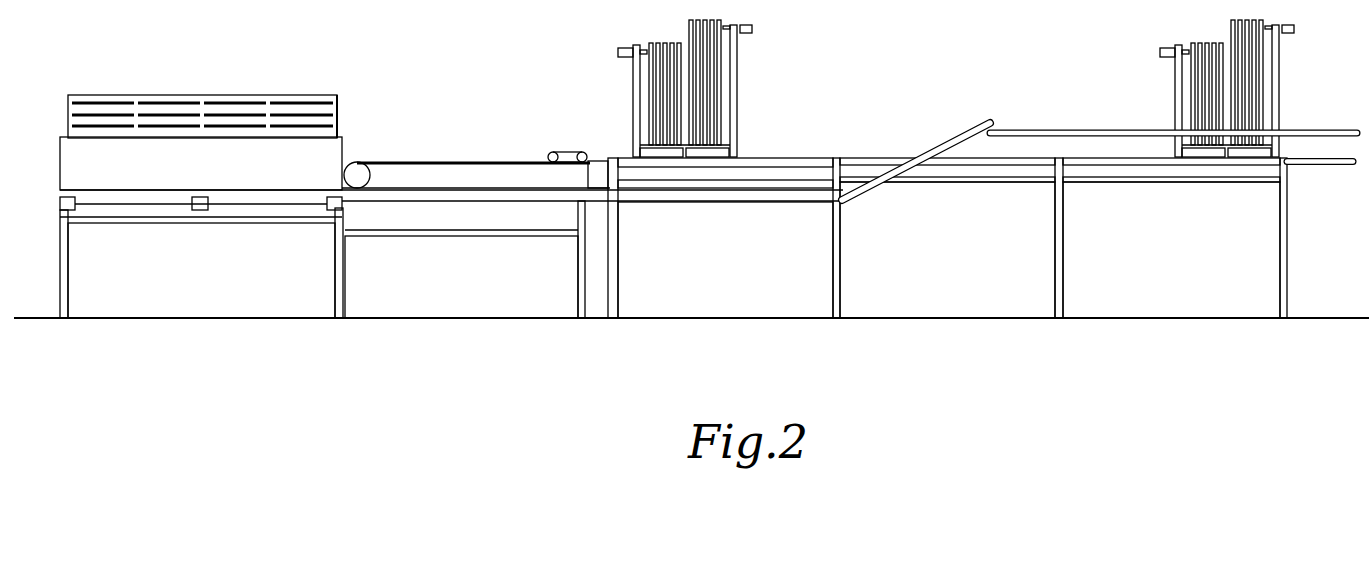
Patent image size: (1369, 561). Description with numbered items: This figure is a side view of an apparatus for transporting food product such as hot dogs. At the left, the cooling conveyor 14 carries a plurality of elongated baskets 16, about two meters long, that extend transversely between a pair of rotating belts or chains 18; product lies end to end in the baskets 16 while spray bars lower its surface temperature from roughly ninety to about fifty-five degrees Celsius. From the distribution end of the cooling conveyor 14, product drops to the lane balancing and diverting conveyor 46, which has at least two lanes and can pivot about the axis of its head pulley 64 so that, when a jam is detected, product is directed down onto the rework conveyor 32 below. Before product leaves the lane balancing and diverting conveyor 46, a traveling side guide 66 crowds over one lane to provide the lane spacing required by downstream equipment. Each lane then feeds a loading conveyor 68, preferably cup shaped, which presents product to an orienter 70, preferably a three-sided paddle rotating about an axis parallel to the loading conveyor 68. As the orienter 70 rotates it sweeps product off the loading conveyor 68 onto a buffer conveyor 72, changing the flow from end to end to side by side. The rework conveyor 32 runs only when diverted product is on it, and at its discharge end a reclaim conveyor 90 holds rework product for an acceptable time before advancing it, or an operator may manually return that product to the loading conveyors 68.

The cooling conveyor 14 is at (222, 68).
The elongated baskets 16 is at (117, 95).
The rotating belts or chains 18 is at (338, 102).
The rework conveyor 32 is at (718, 205).
The lane balancing and diverting conveyor 46 is at (455, 162).
The head pulley 64 is at (368, 178).
The traveling side guide 66 is at (560, 152).
The loading conveyor 68 is at (778, 157).
The orienter 70 is at (640, 148).
The buffer conveyor 72 is at (720, 80).
The reclaim conveyor 90 is at (1088, 128).